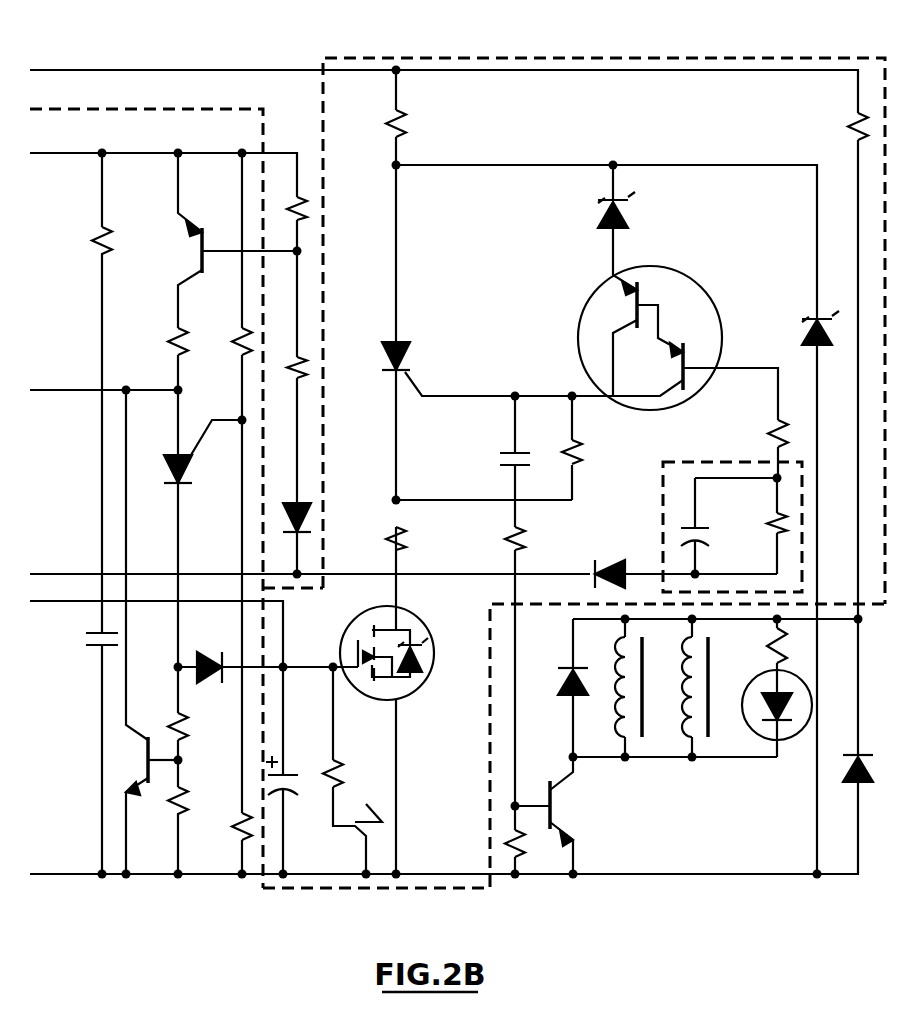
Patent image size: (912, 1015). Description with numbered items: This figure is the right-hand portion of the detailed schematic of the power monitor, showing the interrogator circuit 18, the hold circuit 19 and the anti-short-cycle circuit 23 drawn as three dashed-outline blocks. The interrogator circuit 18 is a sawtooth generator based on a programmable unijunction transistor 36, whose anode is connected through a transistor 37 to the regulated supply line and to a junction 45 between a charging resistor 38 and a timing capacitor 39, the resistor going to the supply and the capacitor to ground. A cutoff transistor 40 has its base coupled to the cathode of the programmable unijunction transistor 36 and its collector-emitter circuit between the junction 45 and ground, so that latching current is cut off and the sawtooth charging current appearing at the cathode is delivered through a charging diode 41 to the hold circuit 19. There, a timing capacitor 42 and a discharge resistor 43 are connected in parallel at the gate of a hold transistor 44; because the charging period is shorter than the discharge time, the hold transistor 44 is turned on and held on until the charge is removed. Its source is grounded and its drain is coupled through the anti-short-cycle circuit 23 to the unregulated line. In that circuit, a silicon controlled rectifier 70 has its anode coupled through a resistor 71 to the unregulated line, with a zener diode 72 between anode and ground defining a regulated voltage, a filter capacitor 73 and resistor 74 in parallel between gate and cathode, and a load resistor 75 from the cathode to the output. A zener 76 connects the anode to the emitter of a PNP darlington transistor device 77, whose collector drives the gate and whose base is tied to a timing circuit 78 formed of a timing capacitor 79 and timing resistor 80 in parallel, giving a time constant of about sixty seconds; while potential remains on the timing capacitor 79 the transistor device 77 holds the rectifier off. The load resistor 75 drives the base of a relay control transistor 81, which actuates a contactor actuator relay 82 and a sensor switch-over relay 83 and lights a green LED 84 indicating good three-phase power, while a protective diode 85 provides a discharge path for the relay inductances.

The interrogator circuit 18 is at (143, 888).
The hold circuit 19 is at (392, 888).
The anti-short-cycle circuit 23 is at (557, 57).
The programmable unijunction transistor 36 is at (190, 460).
The transistor 37 is at (193, 232).
The charging resistor 38 is at (108, 235).
The timing capacitor 39 is at (88, 633).
The cutoff transistor 40 is at (140, 735).
The charging diode 41 is at (205, 685).
The timing capacitor 42 is at (292, 773).
The discharge resistor 43 is at (372, 806).
The hold transistor 44 is at (415, 620).
The junction 45 is at (126, 390).
The silicon controlled rectifier 70 is at (408, 348).
The resistor 71 is at (410, 125).
The zener diode 72 is at (808, 322).
The filter capacitor 73 is at (507, 452).
The resistor 74 is at (582, 452).
The load resistor 75 is at (523, 538).
The zener 76 is at (628, 217).
The transistor device 77 is at (606, 290).
The timing circuit 78 is at (743, 462).
The timing capacitor 79 is at (688, 523).
The timing resistor 80 is at (768, 523).
The relay control transistor 81 is at (560, 806).
The contactor actuator relay 82 is at (645, 735).
The sensor switch-over relay 83 is at (712, 735).
The green LED 84 is at (790, 737).
The protective diode 85 is at (573, 663).